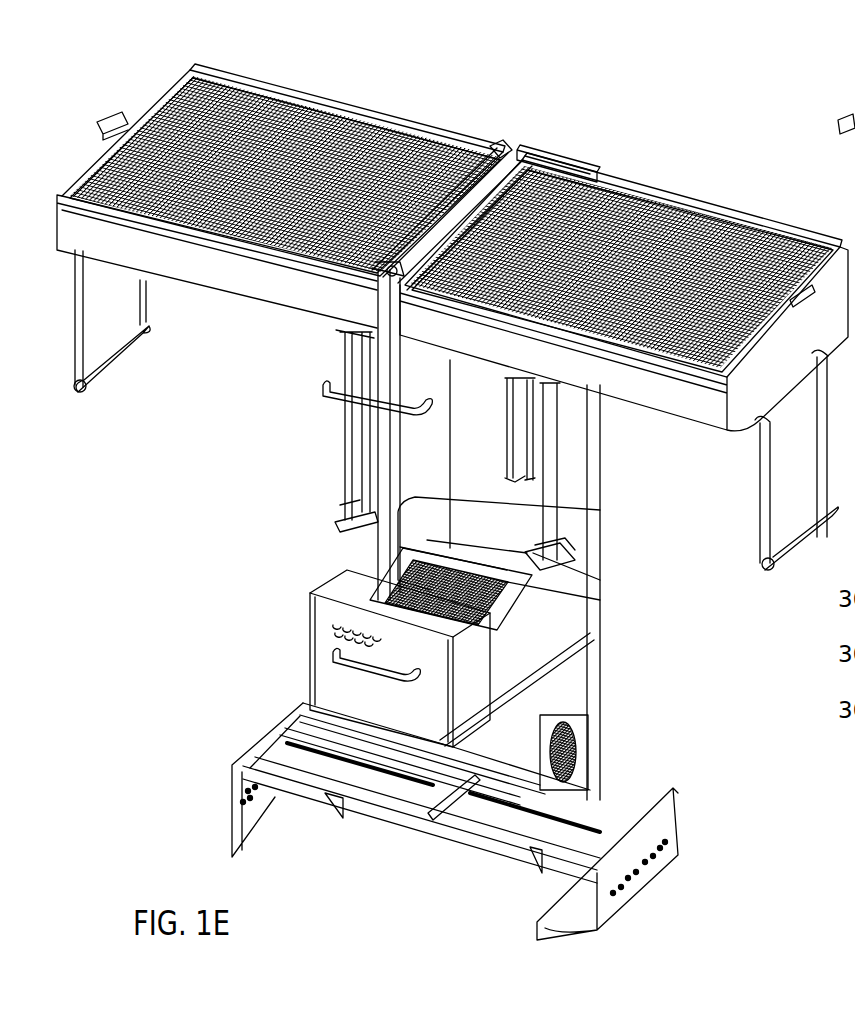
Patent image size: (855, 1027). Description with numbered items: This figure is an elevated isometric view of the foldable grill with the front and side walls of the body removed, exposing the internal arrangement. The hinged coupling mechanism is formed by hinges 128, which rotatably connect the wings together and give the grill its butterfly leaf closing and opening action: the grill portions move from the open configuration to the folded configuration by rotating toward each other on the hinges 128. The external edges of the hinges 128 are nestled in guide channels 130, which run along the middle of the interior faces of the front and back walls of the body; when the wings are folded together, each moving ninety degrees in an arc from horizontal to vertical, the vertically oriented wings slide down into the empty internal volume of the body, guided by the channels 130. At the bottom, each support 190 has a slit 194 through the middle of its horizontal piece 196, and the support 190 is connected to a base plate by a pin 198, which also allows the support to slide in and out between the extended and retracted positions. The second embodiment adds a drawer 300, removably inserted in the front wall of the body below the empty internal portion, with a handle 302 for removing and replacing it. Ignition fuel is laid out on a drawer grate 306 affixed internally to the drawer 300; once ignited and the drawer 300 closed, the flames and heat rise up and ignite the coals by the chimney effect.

The hinges 128 is at (497, 157).
The guide channels 130 is at (383, 560).
The support 190 is at (716, 868).
The slit 194 is at (540, 807).
The horizontal piece 196 is at (610, 807).
The pin 198 is at (367, 757).
The drawer 300 is at (300, 700).
The handle 302 is at (332, 665).
The drawer grate 306 is at (487, 610).